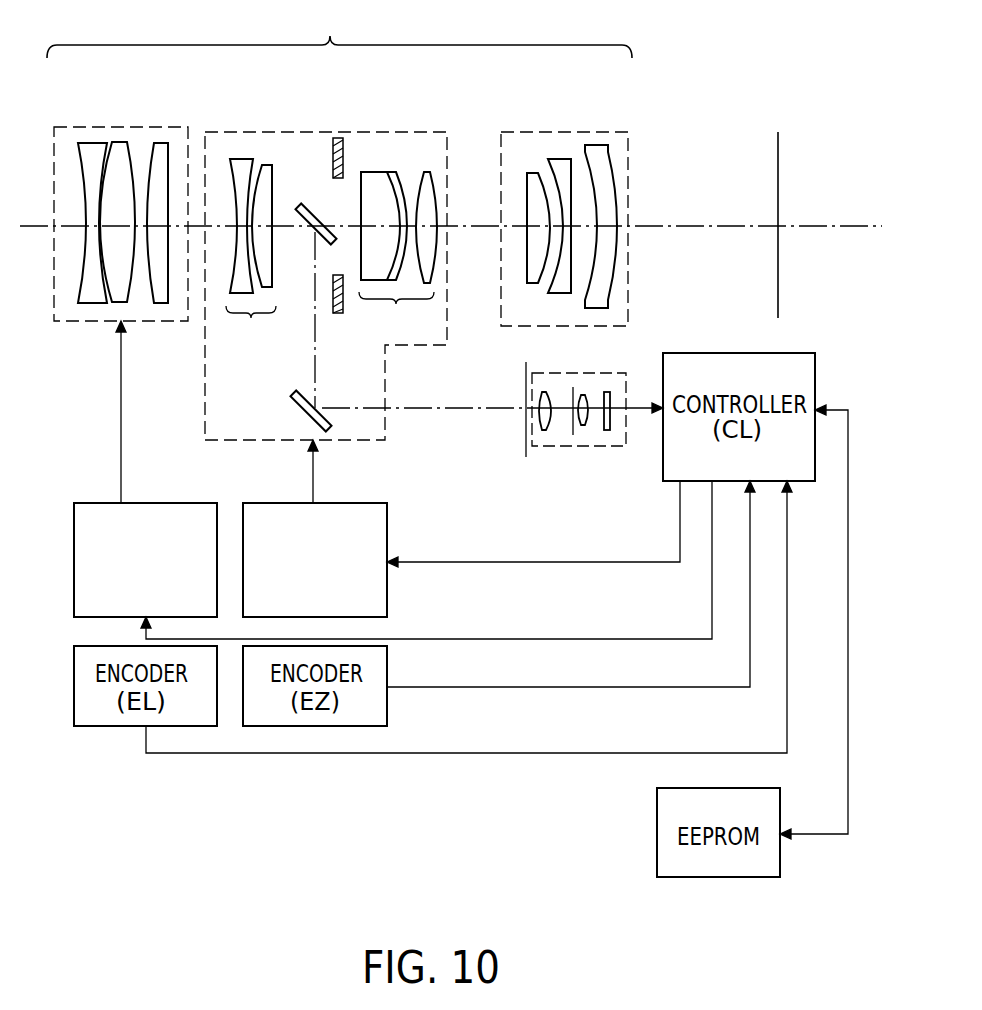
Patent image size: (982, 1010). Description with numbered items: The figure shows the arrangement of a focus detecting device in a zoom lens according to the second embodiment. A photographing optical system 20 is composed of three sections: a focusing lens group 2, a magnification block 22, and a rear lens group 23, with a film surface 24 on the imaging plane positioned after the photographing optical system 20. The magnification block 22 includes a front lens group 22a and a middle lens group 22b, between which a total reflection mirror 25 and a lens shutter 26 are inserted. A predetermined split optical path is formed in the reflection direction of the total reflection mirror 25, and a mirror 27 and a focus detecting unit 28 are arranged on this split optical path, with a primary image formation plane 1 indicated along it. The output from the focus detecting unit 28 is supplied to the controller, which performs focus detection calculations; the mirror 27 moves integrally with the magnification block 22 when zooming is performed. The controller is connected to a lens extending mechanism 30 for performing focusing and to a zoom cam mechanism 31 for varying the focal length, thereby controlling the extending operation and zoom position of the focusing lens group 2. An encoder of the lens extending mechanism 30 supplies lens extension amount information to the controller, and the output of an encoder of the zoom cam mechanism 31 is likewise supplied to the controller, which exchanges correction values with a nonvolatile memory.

The photographing optical system 20 is at (339, 33).
The focusing lens group 2 is at (128, 127).
The magnification block 22 is at (326, 132).
The front lens group 22a is at (251, 252).
The middle lens group 22b is at (398, 253).
The rear lens group 23 is at (566, 132).
The film surface 24 is at (779, 132).
The total reflection mirror 25 is at (301, 209).
The lens shutter 26 is at (345, 144).
The mirror 27 is at (302, 418).
The focus detecting unit 28 is at (600, 447).
The primary image formation plane 1 is at (525, 456).
The lens extending mechanism 30 is at (181, 503).
The zoom cam mechanism 31 is at (346, 503).